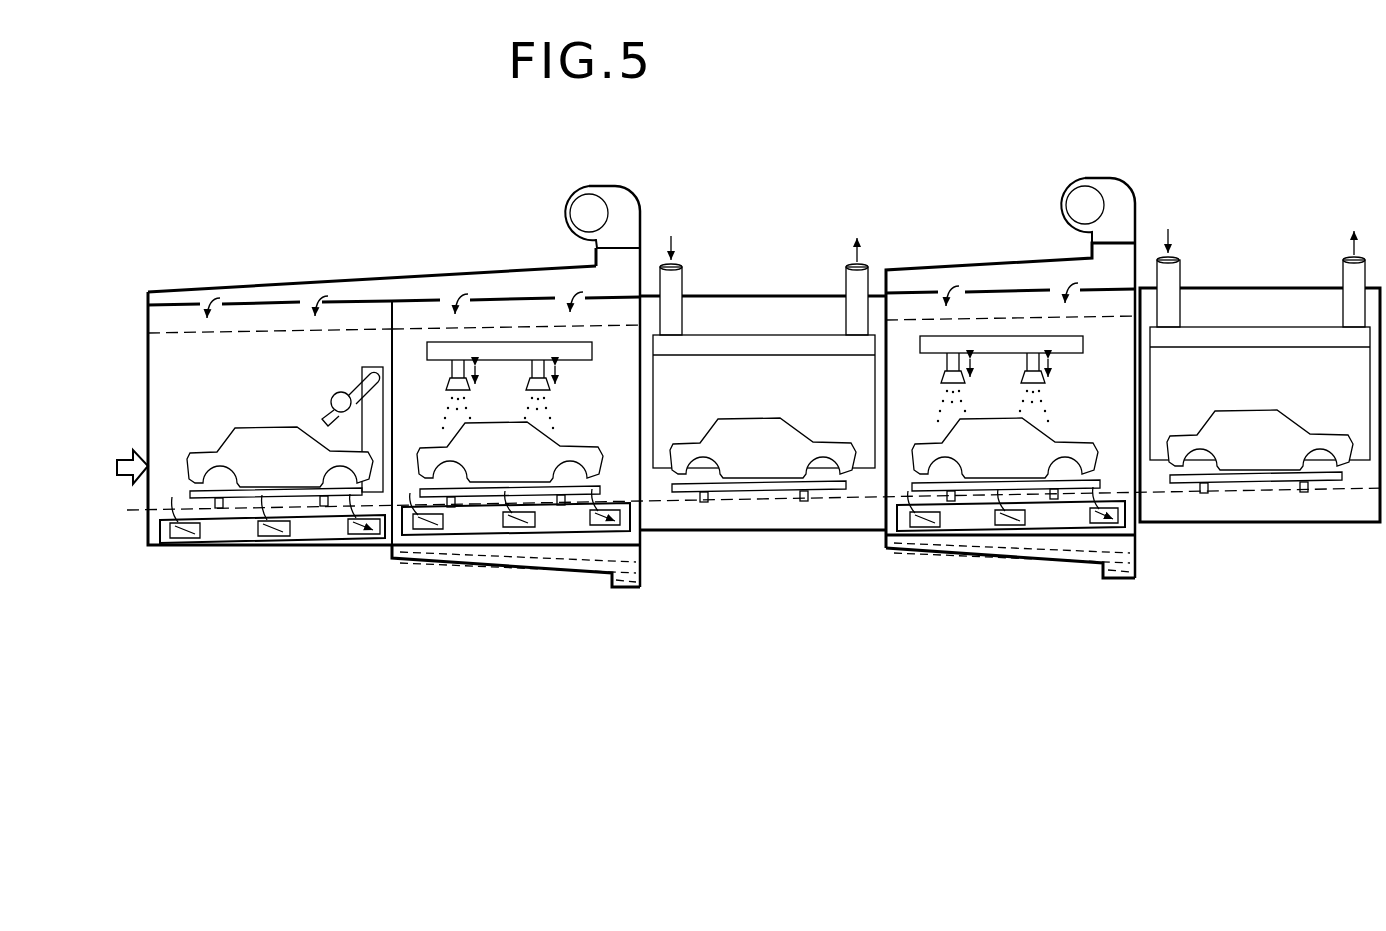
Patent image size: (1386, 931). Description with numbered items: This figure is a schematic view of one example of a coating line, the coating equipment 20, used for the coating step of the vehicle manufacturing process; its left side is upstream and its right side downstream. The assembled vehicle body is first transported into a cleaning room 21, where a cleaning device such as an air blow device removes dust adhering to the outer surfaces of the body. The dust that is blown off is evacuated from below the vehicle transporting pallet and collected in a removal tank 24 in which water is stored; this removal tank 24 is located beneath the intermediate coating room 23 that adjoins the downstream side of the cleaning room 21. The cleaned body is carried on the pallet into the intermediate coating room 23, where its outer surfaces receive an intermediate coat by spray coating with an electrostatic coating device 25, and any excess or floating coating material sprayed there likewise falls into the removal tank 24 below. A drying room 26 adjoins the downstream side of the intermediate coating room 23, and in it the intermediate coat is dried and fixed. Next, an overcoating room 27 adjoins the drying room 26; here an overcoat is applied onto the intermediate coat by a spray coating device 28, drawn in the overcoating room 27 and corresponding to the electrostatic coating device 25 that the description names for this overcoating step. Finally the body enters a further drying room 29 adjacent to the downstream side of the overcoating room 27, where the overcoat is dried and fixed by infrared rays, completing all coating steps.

The coating equipment 20 is at (774, 192).
The cleaning room 21 is at (172, 375).
The intermediate coating room 23 is at (500, 312).
The removal tank 24 is at (575, 552).
The electrostatic coating device 25 is at (437, 350).
The drying room 26 is at (791, 385).
The overcoating room 27 is at (1012, 305).
The spray nozzle unit 28 is at (976, 350).
The drying room 29 is at (1219, 380).